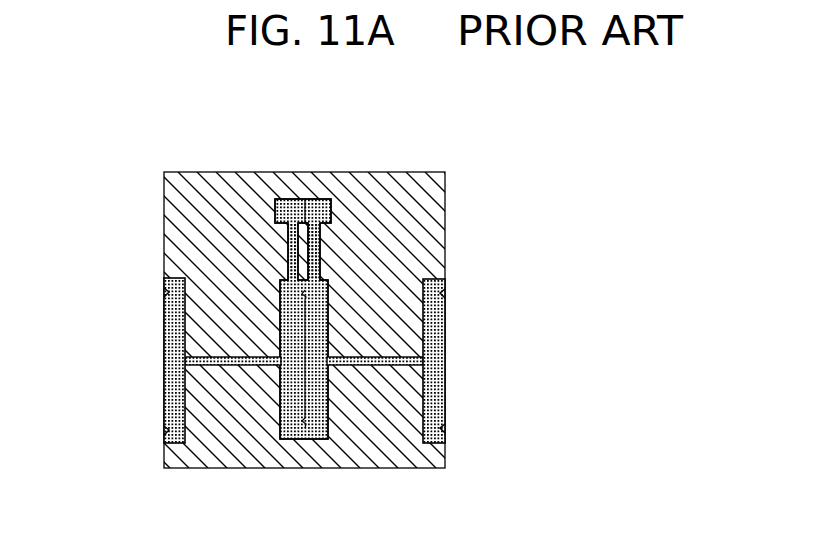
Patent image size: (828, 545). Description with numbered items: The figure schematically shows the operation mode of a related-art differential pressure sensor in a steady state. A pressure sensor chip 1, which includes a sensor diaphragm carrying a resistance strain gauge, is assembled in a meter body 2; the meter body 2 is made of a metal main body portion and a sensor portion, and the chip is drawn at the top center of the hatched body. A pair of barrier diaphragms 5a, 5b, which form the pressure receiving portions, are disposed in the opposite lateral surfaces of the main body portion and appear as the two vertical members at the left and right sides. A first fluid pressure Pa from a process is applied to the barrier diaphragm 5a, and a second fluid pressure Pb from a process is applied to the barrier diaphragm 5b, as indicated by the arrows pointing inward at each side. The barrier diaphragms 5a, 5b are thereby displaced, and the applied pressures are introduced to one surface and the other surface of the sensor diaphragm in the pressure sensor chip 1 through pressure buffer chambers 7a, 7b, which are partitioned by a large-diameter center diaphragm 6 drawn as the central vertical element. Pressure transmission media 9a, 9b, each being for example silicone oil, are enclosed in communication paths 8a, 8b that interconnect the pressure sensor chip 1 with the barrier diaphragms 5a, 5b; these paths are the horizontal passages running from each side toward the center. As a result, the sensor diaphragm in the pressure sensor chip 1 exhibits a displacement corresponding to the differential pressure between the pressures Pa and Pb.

The pressure sensor chip 1 is at (318, 199).
The meter body 2 is at (164, 196).
The barrier diaphragm 5a is at (170, 319).
The barrier diaphragm 5b is at (446, 394).
The center diaphragm 6 is at (300, 400).
The pressure buffer chamber 7a is at (284, 297).
The pressure buffer chamber 7b is at (317, 303).
The communication path 8a is at (230, 366).
The communication path 8b is at (382, 366).
The pressure transmission medium 9a is at (172, 380).
The pressure transmission medium 9b is at (432, 327).
The first fluid pressure Pa is at (162, 360).
The second fluid pressure Pb is at (456, 360).